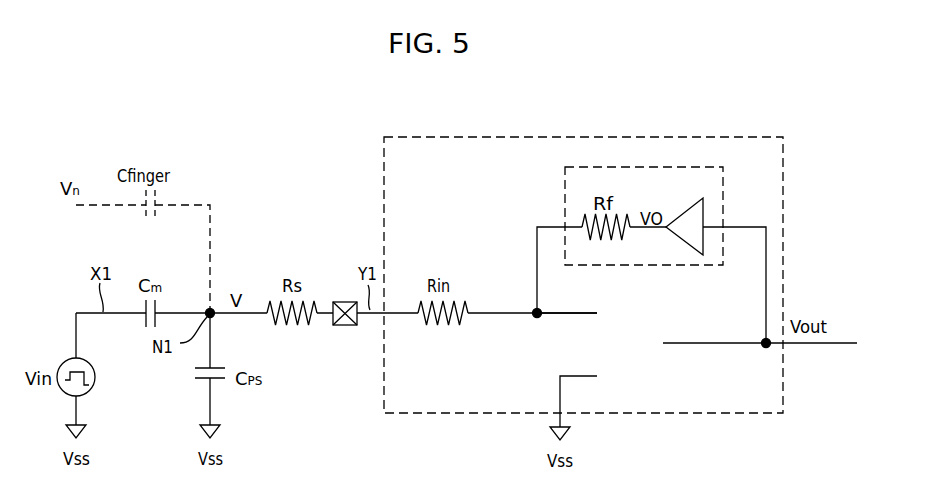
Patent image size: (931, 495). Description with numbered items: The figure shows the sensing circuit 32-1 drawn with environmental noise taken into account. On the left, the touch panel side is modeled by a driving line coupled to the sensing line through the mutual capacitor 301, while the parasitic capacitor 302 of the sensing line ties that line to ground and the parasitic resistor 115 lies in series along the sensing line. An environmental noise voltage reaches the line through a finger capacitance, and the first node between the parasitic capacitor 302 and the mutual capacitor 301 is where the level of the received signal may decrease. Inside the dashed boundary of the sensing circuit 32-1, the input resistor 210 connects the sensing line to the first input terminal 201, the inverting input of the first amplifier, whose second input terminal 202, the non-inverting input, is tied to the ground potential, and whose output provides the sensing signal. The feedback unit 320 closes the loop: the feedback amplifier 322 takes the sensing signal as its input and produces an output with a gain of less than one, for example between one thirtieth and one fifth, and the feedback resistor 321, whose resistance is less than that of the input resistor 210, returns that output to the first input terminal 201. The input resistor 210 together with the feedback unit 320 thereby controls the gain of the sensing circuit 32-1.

The capacitor 301 is at (146, 323).
The capacitor 302 is at (198, 383).
The parasitic resistor 115 is at (292, 325).
The input resistor 210 is at (442, 325).
The first input terminal 201 is at (572, 313).
The second input terminal 202 is at (675, 303).
The feedback unit 320 is at (723, 210).
The feedback resistor 321 is at (608, 240).
The feedback amplifier 322 is at (687, 203).
The sensing circuit 32-1 is at (783, 173).